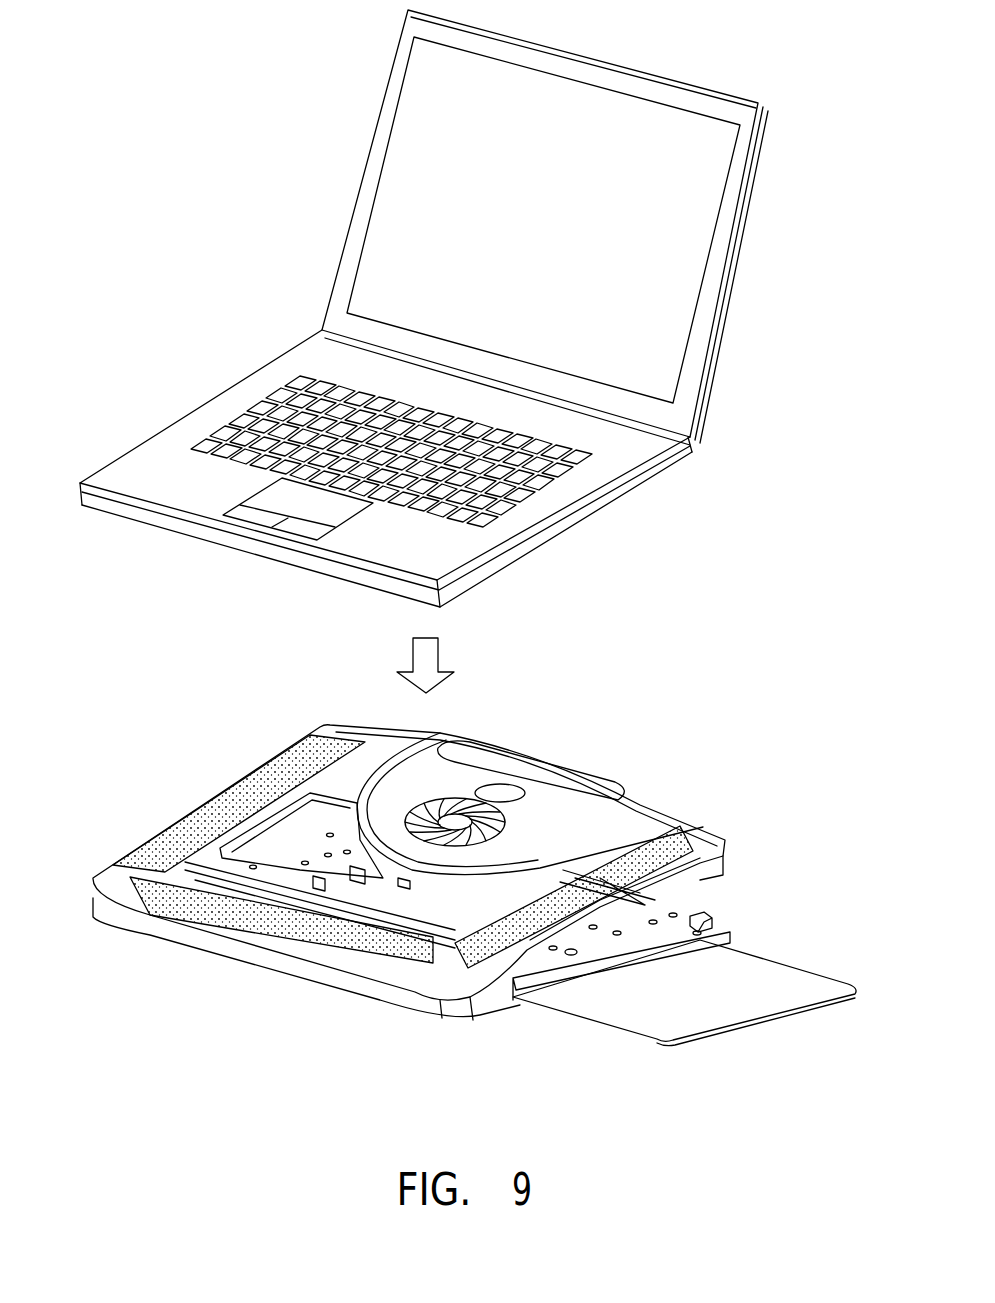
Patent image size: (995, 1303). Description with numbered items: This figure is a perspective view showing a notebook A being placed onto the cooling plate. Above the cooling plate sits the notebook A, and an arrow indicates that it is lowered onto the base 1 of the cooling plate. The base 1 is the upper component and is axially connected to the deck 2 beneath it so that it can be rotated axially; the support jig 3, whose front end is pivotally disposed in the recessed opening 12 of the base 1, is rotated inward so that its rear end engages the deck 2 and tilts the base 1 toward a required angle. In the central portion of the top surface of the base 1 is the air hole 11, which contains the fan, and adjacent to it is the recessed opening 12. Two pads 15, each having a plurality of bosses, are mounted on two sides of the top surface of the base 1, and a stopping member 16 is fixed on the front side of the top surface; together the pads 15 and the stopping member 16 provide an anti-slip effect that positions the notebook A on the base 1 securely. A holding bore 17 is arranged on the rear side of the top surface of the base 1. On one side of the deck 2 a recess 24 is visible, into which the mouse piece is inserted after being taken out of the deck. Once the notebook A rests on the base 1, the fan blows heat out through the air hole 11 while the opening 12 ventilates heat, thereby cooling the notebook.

The notebook A is at (655, 463).
The base 1 is at (548, 742).
The deck 2 is at (467, 1018).
The support jig 3 is at (645, 903).
The air hole 11 is at (482, 798).
The recessed opening 12 is at (282, 833).
The pads 15 is at (218, 820).
The stopping member 16 is at (147, 915).
The holding bore 17 is at (578, 783).
The recess 24 is at (548, 977).